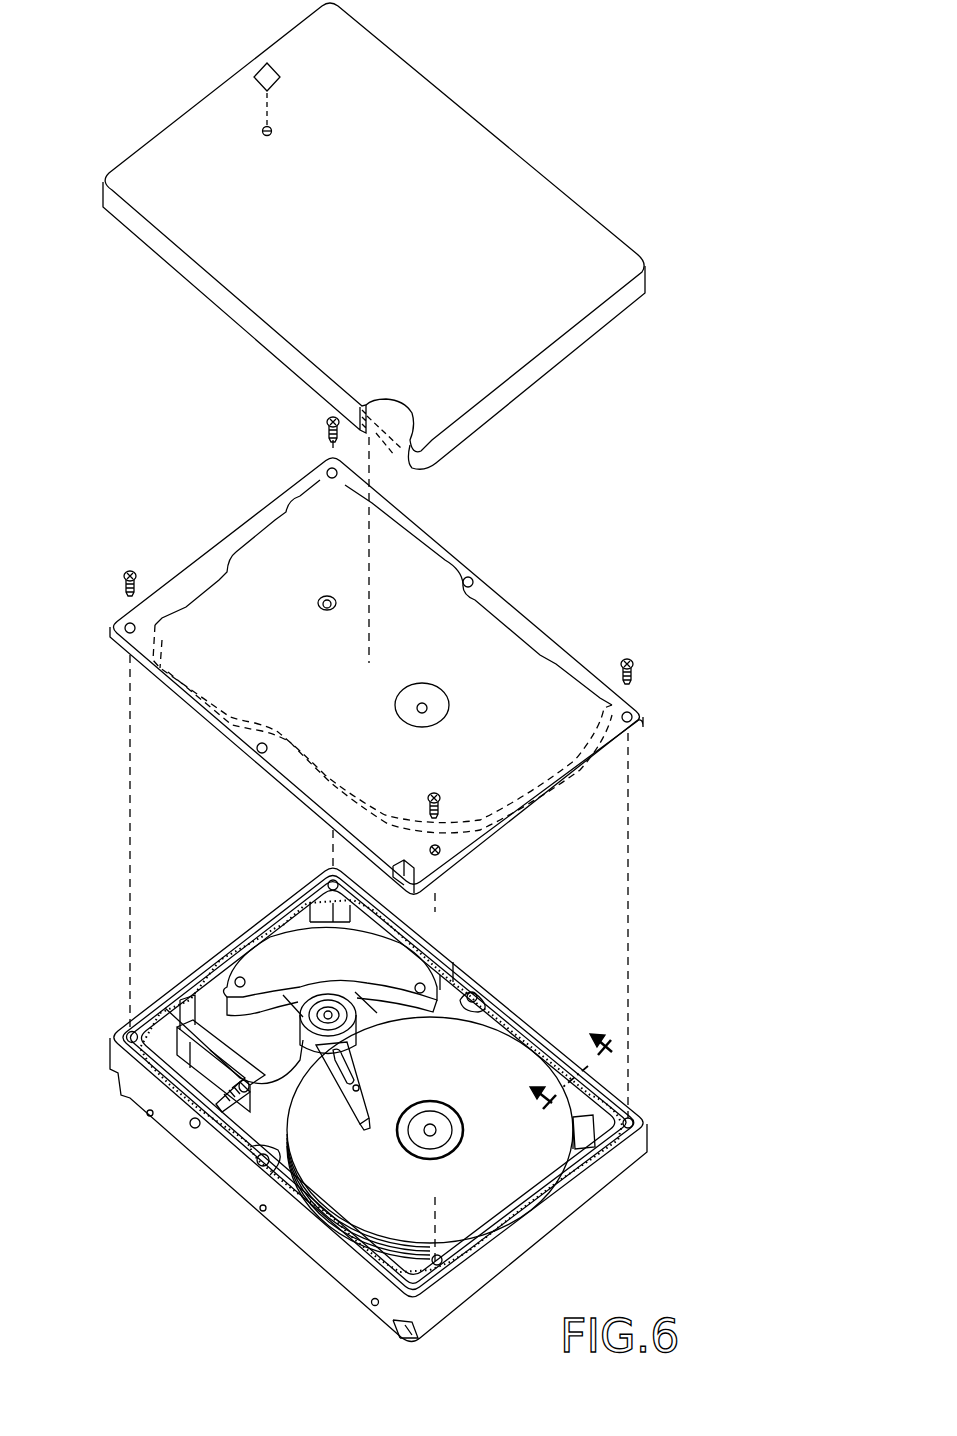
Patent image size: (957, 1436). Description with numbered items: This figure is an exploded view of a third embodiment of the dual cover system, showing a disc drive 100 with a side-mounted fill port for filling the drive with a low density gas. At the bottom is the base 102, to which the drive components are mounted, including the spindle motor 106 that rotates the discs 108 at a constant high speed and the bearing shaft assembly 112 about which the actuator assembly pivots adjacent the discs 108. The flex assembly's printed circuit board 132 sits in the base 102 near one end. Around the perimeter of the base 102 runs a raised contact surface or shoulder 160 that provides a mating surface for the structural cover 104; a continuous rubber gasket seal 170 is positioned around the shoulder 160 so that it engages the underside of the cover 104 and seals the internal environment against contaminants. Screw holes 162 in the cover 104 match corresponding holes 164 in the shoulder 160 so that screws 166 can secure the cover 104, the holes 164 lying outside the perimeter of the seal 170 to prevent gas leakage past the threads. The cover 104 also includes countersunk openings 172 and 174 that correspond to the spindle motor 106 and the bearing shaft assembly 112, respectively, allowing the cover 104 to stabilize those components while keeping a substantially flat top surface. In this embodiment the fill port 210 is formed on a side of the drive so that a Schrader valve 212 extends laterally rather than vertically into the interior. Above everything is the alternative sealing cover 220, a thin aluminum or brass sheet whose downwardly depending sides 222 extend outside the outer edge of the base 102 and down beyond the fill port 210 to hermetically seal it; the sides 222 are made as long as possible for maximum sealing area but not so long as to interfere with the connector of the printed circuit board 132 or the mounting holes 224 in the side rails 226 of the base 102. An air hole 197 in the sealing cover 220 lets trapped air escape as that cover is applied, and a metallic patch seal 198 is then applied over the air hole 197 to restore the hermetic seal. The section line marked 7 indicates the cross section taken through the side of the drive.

The disc drive 100 is at (702, 517).
The base 102 is at (527, 1235).
The structural cover 104 is at (551, 620).
The spindle motor 106 is at (455, 1105).
The disc 108 is at (436, 1063).
The bearing shaft assembly 112 is at (330, 1013).
The printed circuit board 132 is at (398, 1322).
The raised contact surface or shoulder 160 is at (433, 1282).
The screw holes 162 is at (440, 852).
The holes 164 is at (128, 1032).
The screws 166 is at (138, 578).
The seal 170 is at (468, 987).
The countersunk opening 172 is at (430, 708).
The countersunk opening 174 is at (328, 598).
The air hole 197 is at (273, 131).
The patch seal 198 is at (252, 66).
The fill port 210 is at (197, 1124).
The Schrader valve 212 is at (233, 1105).
The sealing cover 220 is at (492, 120).
The downwardly depending sides 222 is at (170, 257).
The mounting holes 224 is at (372, 1304).
The side rails 226 is at (310, 1247).
The section line 7- 7 is at (570, 1072).